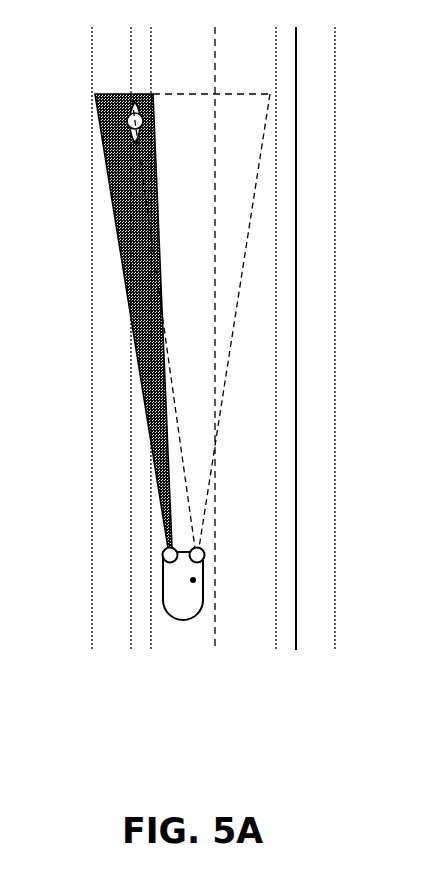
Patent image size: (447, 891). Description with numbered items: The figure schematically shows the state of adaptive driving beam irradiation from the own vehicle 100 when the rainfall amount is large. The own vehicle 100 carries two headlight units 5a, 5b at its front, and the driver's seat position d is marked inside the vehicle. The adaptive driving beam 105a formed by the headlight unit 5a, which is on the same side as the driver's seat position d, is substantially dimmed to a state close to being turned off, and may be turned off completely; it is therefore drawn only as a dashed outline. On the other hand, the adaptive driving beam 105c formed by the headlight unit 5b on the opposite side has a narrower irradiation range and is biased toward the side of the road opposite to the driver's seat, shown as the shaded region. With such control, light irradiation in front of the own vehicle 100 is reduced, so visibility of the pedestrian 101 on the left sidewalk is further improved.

The pedestrian 101 is at (128, 122).
The adaptive driving beam 105c is at (128, 286).
The adaptive driving beam 105a is at (228, 274).
The own vehicle 100 is at (190, 612).
The headlight unit 5a is at (205, 553).
The headlight unit 5b is at (162, 553).
The driver's seat position d is at (195, 581).